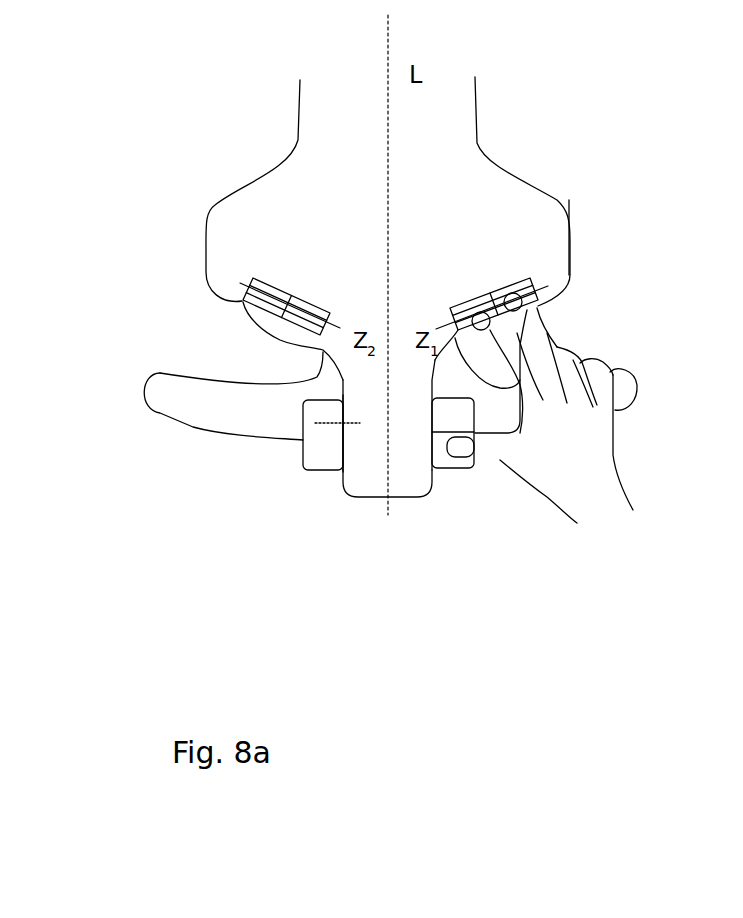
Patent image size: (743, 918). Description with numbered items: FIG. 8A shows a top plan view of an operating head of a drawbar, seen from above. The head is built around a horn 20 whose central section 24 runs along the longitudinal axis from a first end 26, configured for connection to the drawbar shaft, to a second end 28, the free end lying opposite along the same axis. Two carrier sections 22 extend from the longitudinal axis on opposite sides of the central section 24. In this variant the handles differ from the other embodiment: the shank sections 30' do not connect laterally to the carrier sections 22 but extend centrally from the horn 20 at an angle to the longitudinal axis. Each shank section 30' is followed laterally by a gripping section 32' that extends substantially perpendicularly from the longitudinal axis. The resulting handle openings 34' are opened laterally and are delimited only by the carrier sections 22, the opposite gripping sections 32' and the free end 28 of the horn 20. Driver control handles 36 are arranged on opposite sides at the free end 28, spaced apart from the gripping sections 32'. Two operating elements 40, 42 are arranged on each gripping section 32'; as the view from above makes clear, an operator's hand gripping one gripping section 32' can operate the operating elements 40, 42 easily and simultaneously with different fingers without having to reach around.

The horn 20 is at (435, 182).
The carrier section 22 is at (298, 272).
The central section 24 is at (377, 263).
The first end 26 is at (370, 118).
The second end 28 is at (388, 475).
The shank section 30' is at (334, 447).
The gripping section 32' is at (345, 464).
The handle opening 34' is at (401, 348).
The driver control handle 36 is at (447, 413).
The operating element 40 is at (267, 332).
The operating element 42 is at (302, 343).